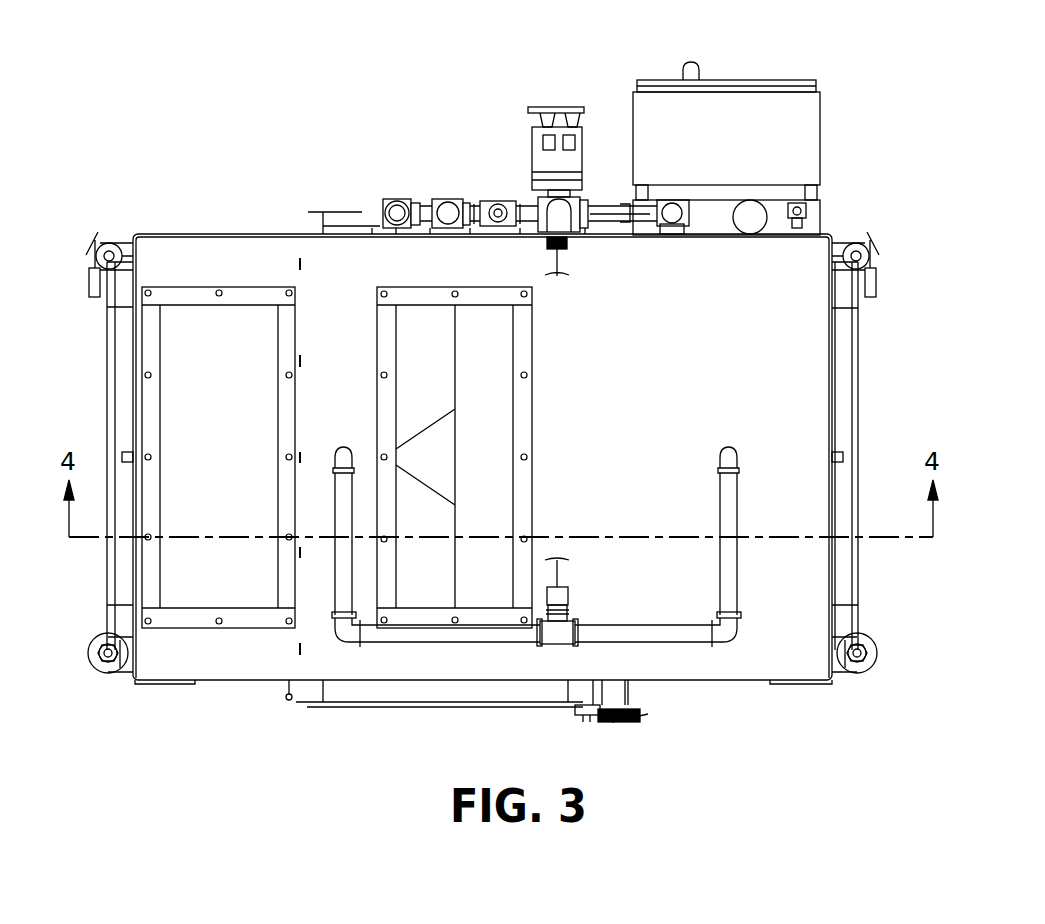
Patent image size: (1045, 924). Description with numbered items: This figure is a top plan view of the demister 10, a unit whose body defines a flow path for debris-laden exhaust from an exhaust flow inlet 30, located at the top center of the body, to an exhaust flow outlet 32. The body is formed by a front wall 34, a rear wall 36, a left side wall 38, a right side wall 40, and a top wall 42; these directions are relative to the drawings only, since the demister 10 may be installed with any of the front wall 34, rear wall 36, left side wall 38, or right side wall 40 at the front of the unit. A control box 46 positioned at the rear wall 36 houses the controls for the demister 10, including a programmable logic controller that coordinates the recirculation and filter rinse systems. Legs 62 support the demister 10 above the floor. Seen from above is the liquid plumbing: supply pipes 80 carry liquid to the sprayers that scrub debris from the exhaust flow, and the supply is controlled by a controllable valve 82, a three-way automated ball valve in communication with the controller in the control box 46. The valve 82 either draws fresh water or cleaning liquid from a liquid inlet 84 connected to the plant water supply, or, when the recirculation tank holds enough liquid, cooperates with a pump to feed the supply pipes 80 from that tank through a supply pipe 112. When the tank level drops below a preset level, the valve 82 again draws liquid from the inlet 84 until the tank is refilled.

The demister 10 is at (155, 75).
The exhaust flow inlet 30 is at (493, 413).
The exhaust flow outlet 32 is at (208, 385).
The front wall 34 is at (745, 680).
The rear wall 36 is at (235, 233).
The left side wall 38 is at (133, 332).
The right side wall 40 is at (830, 350).
The top wall 42 is at (812, 392).
The control box 46 is at (798, 125).
The legs 62 is at (90, 253).
The supply pipes 80 is at (557, 260).
The controllable valve 82 is at (533, 157).
The liquid inlet 84 is at (397, 207).
The supply pipe 112 is at (668, 212).